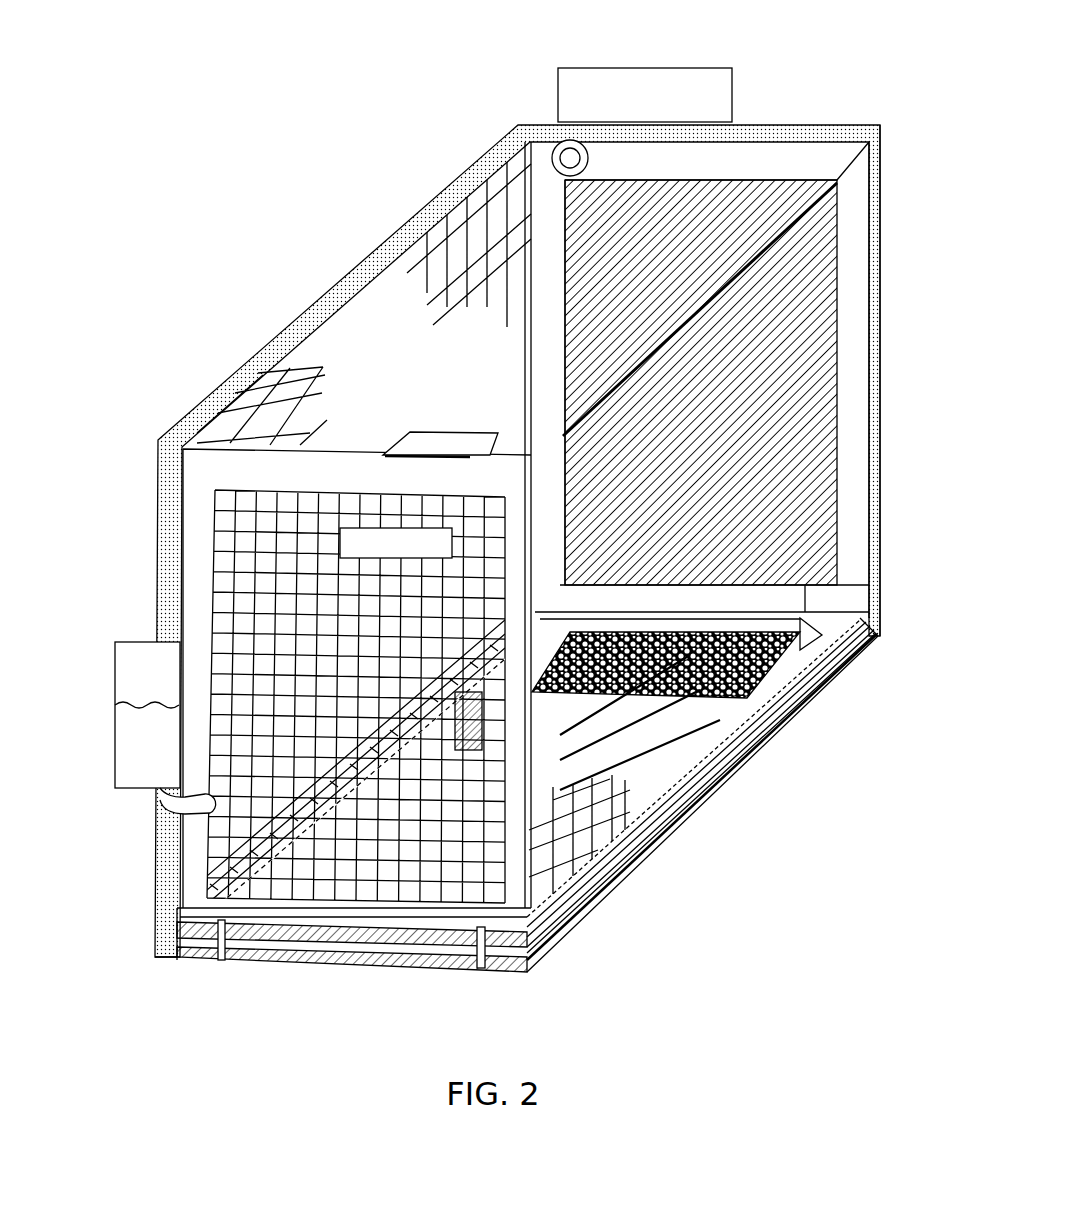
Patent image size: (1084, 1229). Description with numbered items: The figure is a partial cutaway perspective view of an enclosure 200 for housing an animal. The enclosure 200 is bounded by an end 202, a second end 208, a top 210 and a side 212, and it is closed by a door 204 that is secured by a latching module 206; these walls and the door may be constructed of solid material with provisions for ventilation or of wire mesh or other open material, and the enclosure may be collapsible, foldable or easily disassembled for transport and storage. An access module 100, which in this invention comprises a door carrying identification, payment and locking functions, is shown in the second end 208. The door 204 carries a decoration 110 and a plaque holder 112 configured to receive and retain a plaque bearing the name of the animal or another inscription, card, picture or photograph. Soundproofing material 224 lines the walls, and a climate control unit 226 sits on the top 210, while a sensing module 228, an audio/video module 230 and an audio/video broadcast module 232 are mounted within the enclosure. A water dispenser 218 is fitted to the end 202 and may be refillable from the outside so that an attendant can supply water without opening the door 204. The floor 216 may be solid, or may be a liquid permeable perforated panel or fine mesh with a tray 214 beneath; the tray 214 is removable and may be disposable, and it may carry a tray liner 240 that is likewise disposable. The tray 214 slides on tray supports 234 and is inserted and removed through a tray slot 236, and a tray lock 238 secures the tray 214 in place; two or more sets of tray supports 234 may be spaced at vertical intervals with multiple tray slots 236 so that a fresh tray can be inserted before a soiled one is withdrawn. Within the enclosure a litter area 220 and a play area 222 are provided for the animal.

The access module 100 is at (713, 187).
The decoration 110 is at (245, 548).
The plaque holder 112 is at (358, 527).
The enclosure 200 is at (378, 74).
The end 202 is at (188, 615).
The door 204 is at (235, 535).
The latching module 206 is at (460, 752).
The second end 208 is at (848, 200).
The top 210 is at (300, 332).
The side 212 is at (435, 325).
The tray 214 is at (673, 735).
The floor 216 is at (462, 960).
The water dispenser 218 is at (140, 778).
The litter area 220 is at (823, 688).
The play area 222 is at (612, 760).
The soundproofing material 224 is at (455, 193).
The climate control unit 226 is at (686, 70).
The sensing module 228 is at (850, 599).
The audio/video module 230 is at (560, 143).
The audio/video broadcast module 232 is at (442, 438).
The tray support 234 is at (210, 862).
The tray slot 236 is at (188, 957).
The tray lock 238 is at (477, 973).
The tray liner 240 is at (870, 631).